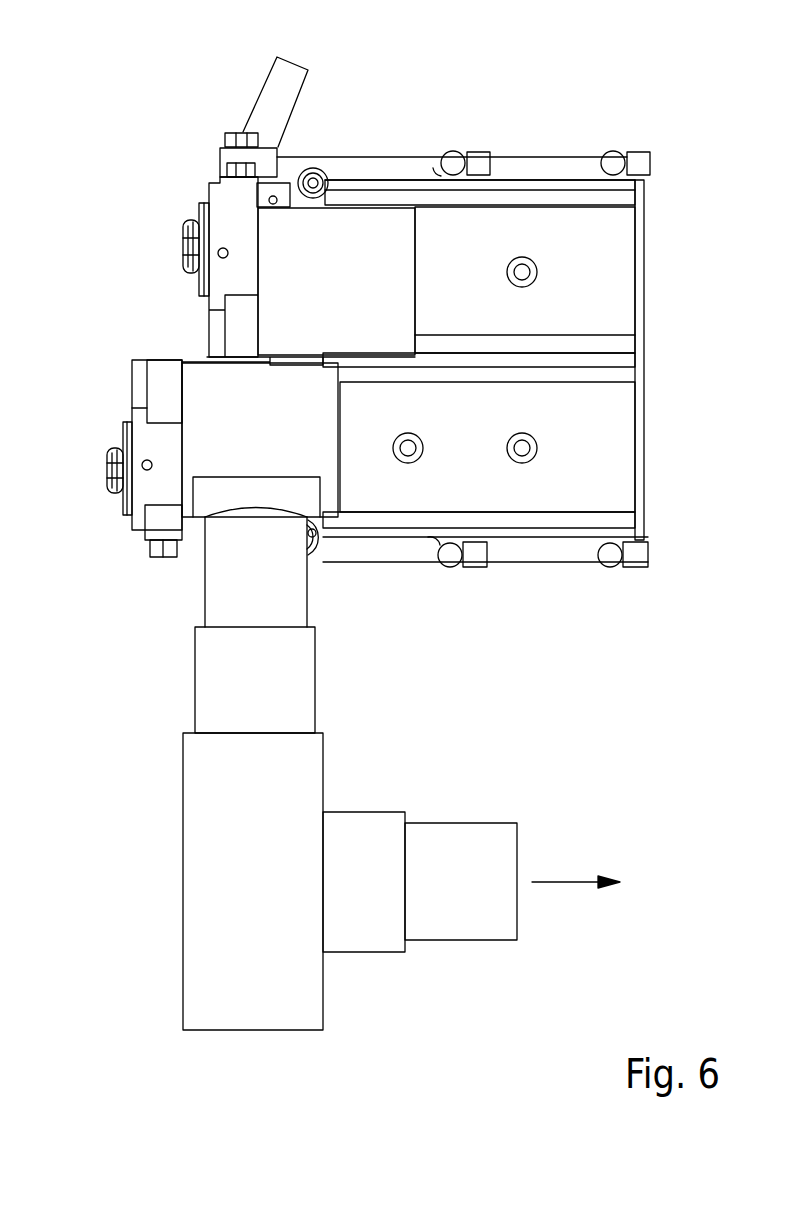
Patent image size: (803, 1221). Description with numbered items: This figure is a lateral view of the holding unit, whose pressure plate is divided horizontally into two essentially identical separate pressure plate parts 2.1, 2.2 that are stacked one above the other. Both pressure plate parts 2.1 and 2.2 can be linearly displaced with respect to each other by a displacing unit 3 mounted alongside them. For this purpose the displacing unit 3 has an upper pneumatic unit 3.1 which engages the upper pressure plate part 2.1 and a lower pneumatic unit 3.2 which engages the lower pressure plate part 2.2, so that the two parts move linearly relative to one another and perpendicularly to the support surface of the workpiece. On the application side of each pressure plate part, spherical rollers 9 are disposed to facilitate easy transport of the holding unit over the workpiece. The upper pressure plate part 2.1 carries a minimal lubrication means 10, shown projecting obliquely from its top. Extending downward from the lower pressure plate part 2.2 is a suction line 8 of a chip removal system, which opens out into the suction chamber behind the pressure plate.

The upper pressure plate part 2.1 is at (194, 324).
The lower pressure plate part 2.2 is at (126, 395).
The displacing unit 3 is at (540, 170).
The upper pneumatic unit 3.1 is at (615, 267).
The lower pneumatic unit 3.2 is at (612, 448).
The suction line 8 is at (215, 892).
The spherical rollers 9 is at (182, 243).
The minimal lubrication means 10 is at (290, 75).